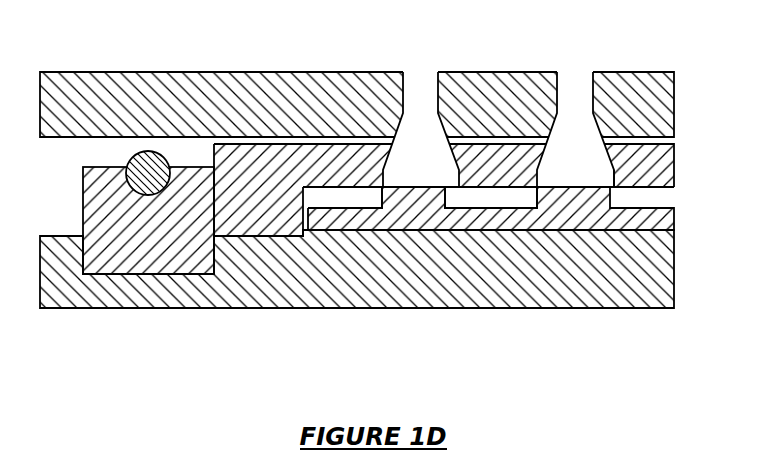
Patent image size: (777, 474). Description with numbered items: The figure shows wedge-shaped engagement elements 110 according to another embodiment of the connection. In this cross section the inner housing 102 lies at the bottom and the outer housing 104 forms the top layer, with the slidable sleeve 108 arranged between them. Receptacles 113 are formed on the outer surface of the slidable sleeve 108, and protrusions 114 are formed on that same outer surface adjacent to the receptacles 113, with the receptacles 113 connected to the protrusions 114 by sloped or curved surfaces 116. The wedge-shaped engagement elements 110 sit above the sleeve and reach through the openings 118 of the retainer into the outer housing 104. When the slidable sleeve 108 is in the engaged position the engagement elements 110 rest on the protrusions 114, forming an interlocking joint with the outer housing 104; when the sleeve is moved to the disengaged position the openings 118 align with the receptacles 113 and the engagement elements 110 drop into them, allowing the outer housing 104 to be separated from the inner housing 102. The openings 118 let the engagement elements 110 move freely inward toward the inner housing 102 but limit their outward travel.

The inner housing 102 is at (295, 308).
The outer housing 104 is at (128, 72).
The slidable sleeve 108 is at (675, 217).
The engagement elements 110 is at (422, 113).
The receptacles 113 is at (367, 200).
The protrusions 114 is at (616, 172).
The sloped or curved surfaces 116 is at (545, 194).
The openings 118 is at (382, 168).